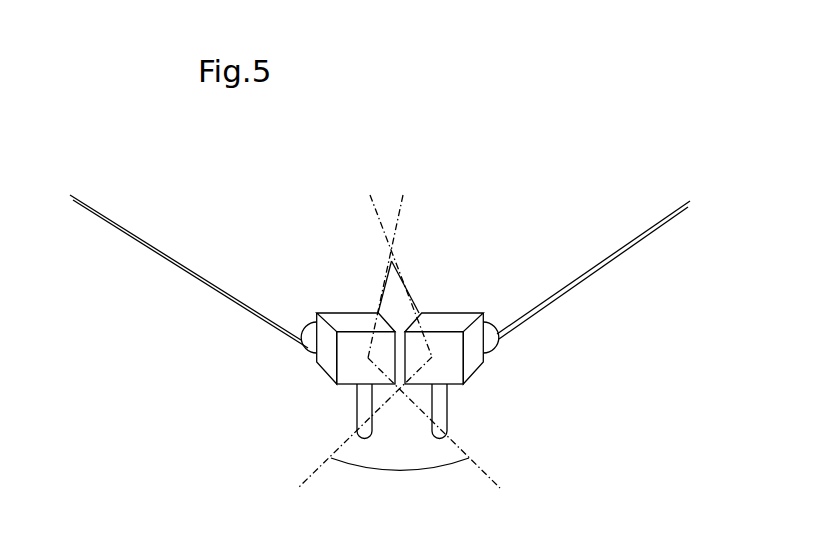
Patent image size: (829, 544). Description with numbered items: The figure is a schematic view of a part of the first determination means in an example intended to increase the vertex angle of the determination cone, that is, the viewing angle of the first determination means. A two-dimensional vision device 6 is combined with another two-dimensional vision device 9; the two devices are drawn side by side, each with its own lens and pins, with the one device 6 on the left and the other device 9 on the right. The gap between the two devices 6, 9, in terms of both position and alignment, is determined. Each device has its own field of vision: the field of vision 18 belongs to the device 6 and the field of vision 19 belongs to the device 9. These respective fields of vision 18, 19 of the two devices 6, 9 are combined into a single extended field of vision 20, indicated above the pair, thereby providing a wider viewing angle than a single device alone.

The two-dimensional vision device 6 is at (318, 366).
The two-dimensional vision device 9 is at (470, 368).
The field of vision 18 is at (268, 253).
The field of vision 19 is at (480, 253).
The extended field of vision 20 is at (397, 141).